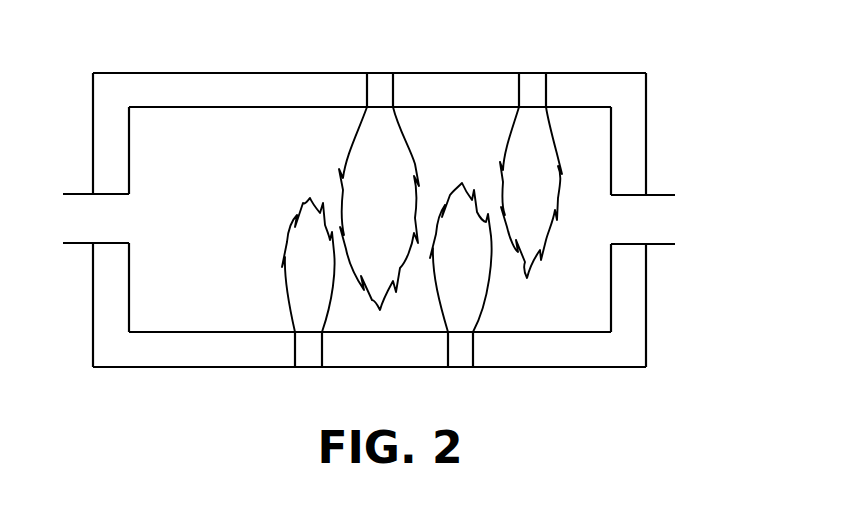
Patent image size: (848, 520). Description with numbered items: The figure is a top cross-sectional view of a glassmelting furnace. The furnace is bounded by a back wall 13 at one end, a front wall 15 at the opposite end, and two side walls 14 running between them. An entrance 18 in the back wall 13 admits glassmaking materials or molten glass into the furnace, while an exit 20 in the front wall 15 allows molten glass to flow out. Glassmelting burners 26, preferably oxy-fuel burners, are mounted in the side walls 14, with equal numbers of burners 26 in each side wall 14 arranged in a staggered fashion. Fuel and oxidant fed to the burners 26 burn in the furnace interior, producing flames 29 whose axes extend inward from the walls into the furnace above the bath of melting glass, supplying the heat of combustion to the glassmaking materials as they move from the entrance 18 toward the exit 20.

The back wall 13 is at (100, 158).
The side walls 14 is at (209, 100).
The front wall 15 is at (616, 153).
The entrance 18 is at (84, 228).
The exit 20 is at (641, 235).
The glassmelting burners 26 is at (382, 73).
The flames 29 is at (366, 198).